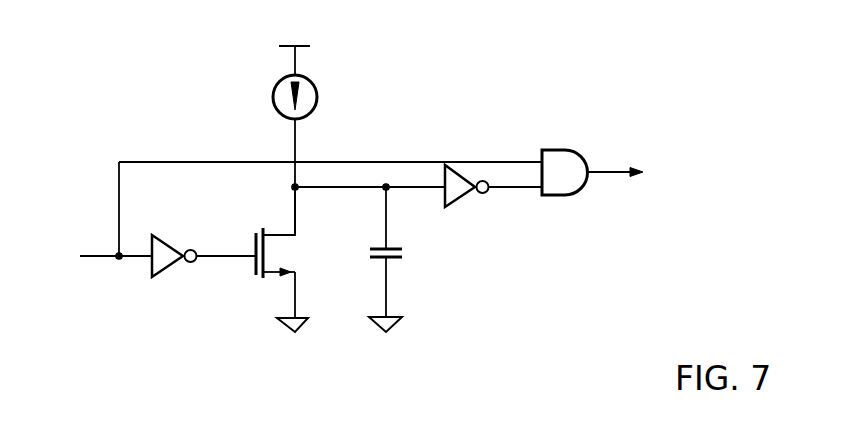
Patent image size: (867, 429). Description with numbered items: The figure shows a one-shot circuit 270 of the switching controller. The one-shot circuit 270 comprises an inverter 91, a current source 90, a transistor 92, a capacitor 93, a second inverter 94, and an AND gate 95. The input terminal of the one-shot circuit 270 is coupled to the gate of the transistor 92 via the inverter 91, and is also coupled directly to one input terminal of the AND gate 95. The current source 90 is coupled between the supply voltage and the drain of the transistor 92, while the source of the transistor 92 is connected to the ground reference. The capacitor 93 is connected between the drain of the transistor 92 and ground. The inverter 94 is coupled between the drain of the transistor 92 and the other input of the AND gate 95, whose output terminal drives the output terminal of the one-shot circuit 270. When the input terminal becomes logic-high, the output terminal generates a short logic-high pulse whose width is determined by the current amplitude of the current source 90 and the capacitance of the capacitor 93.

The one-shot circuit 270 is at (730, 48).
The current source 90 is at (322, 98).
The inverter 91 is at (168, 274).
The transistor 92 is at (300, 247).
The capacitor 93 is at (408, 253).
The inverter 94 is at (460, 200).
The AND gate 95 is at (560, 197).